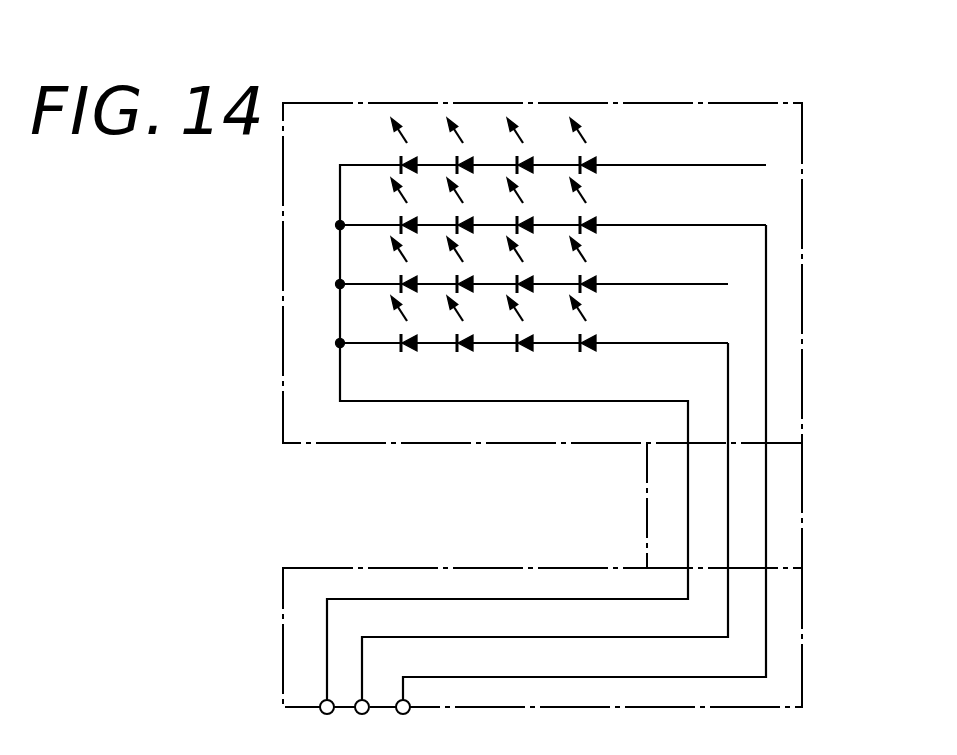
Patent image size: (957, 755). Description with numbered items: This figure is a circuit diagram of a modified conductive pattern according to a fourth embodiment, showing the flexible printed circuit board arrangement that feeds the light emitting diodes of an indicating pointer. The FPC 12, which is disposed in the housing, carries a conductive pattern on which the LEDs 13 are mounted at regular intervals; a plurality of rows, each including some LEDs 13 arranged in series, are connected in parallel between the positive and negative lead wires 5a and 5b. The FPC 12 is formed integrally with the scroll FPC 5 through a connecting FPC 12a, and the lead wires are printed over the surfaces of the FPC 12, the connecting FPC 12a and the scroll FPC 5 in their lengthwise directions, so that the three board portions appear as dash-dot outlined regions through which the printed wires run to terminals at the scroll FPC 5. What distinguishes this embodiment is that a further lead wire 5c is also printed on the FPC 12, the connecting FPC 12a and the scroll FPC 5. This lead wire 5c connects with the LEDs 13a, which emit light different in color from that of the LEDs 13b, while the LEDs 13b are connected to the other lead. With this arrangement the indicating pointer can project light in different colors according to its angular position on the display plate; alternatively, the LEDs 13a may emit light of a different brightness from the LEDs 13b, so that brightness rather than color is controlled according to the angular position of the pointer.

The FPC 12 is at (803, 124).
The connecting FPC 12a is at (803, 481).
The LEDs 13 is at (606, 88).
The LEDs 13a is at (328, 152).
The LEDs 13b is at (328, 267).
The scroll FPC 5 is at (803, 664).
The positive lead wire 5a is at (445, 598).
The negative lead wire 5b is at (482, 637).
The lead wire 5c is at (530, 677).